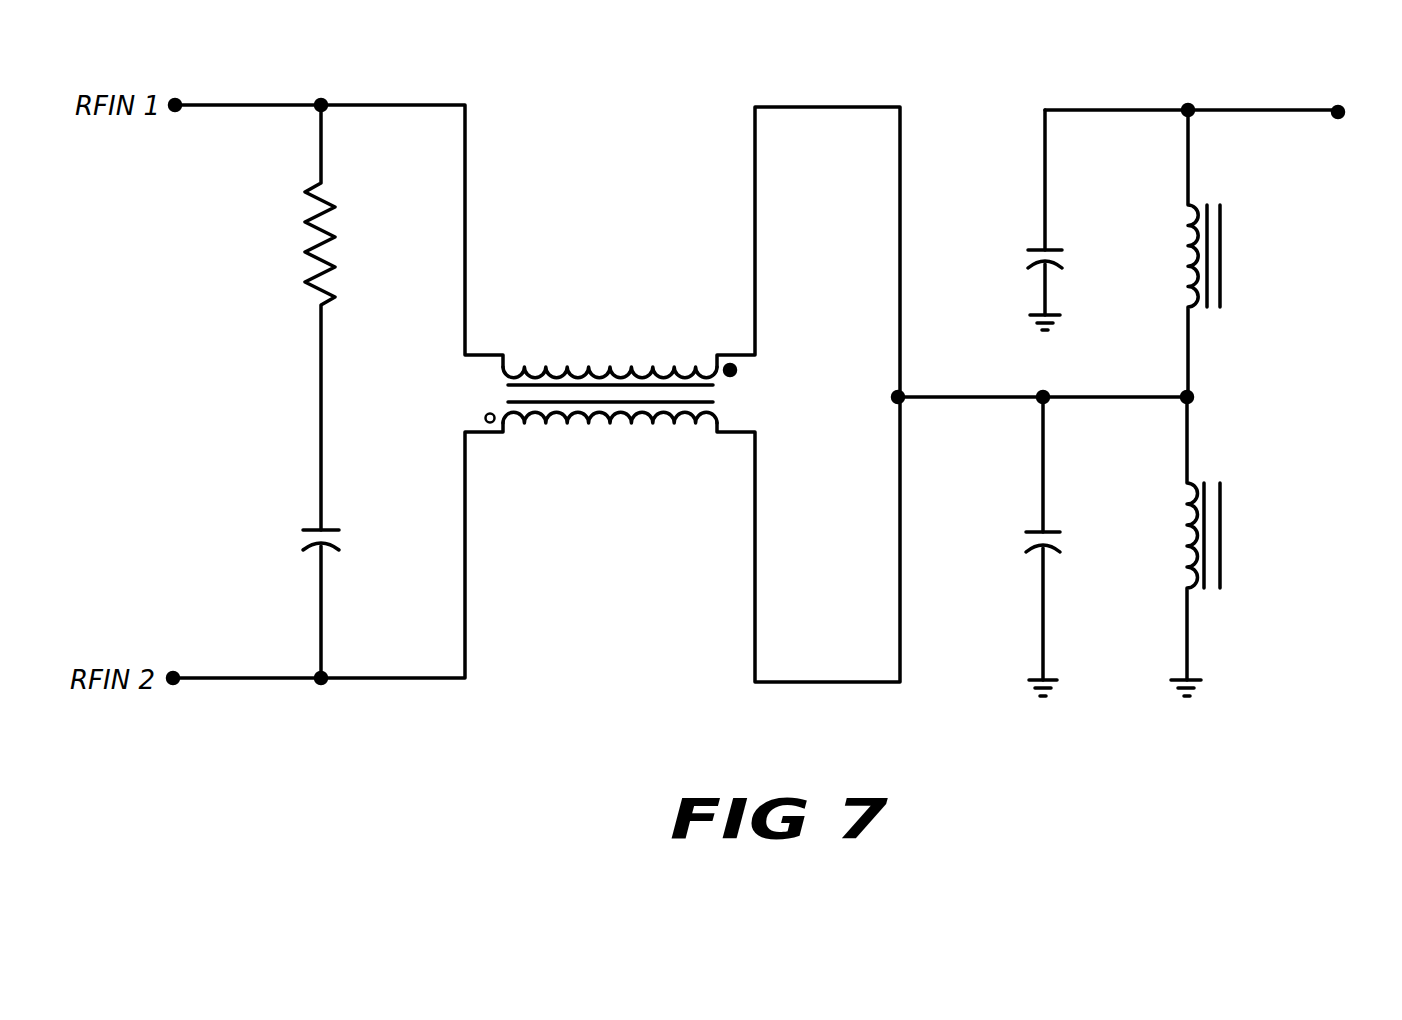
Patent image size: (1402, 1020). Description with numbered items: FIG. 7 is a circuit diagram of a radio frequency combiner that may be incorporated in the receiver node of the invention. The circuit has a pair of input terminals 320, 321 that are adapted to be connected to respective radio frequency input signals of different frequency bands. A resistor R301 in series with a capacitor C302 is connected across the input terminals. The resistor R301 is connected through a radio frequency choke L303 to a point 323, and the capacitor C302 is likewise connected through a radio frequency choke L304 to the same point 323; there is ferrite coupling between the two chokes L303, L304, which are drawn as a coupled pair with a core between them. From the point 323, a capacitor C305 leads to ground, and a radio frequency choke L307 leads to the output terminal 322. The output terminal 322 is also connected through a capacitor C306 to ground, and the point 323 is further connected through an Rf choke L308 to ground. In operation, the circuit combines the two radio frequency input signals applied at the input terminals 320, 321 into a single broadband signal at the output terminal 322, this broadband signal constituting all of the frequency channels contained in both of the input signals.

The input terminal 320 is at (180, 102).
The input terminal 321 is at (176, 683).
The output terminal 322 is at (1340, 108).
The point 323 is at (903, 390).
The resistor R301 is at (305, 253).
The capacitor C302 is at (316, 527).
The radio frequency choke L303 is at (590, 366).
The radio frequency choke L304 is at (590, 425).
The capacitor C305 is at (1038, 530).
The capacitor C306 is at (1040, 248).
The radio frequency choke L307 is at (1200, 253).
The Rf choke L308 is at (1202, 532).